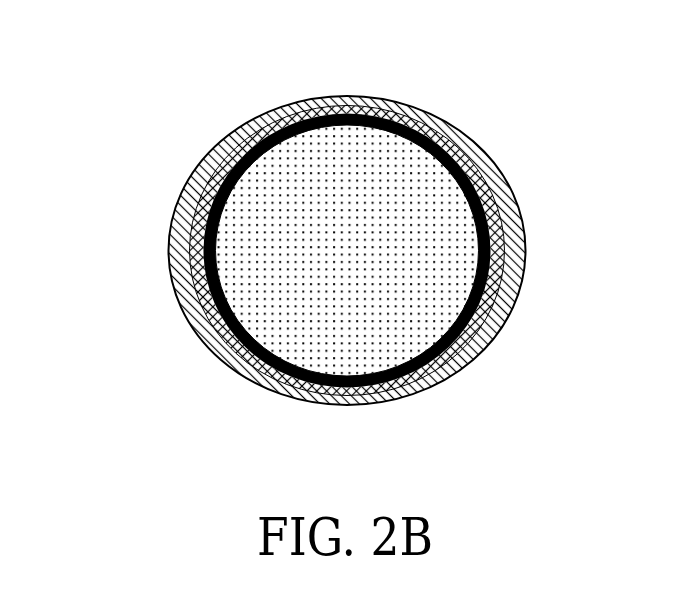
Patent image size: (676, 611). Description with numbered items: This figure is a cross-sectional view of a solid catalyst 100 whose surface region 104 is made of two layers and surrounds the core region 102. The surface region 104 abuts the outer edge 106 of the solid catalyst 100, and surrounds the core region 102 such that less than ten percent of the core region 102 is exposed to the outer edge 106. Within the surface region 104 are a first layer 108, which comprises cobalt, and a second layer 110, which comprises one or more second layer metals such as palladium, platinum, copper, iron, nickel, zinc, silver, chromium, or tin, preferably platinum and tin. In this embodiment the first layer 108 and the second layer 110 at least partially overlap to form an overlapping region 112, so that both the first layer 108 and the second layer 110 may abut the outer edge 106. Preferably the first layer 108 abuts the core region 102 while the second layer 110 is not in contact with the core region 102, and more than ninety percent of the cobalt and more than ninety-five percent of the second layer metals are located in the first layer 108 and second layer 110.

The solid catalyst 100 is at (345, 249).
The core region 102 is at (428, 317).
The surface region 104 is at (180, 310).
The outer edge 106 is at (482, 147).
The first layer 108 is at (283, 383).
The second layer 110 is at (198, 332).
The overlapping region 112 is at (222, 360).